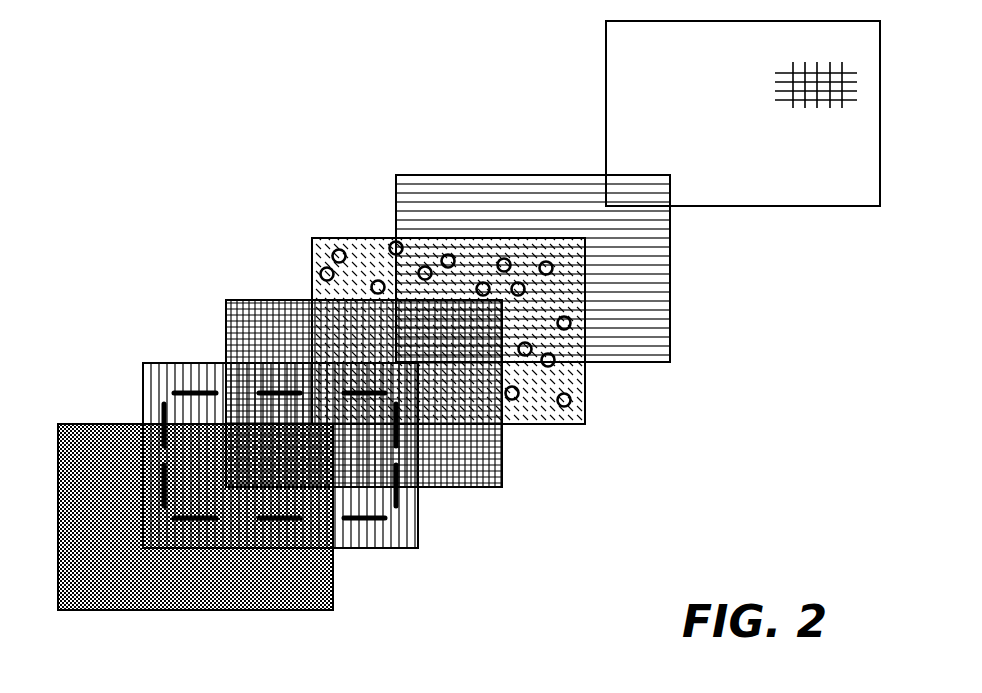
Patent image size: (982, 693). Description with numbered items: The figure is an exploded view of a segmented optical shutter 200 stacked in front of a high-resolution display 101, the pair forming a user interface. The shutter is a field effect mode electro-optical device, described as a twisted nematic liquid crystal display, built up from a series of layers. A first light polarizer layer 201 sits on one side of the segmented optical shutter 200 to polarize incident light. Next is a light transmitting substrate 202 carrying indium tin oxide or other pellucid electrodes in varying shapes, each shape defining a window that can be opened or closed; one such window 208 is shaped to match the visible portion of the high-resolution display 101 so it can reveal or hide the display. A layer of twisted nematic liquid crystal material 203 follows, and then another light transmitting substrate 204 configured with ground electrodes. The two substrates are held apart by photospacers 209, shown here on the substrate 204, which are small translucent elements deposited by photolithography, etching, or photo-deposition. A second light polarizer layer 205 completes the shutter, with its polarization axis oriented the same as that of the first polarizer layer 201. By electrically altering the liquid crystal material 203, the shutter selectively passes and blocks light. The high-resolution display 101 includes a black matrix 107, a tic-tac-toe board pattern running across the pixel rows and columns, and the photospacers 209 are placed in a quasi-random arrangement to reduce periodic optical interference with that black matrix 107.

The high-resolution display 101 is at (743, 197).
The black matrix 107 is at (805, 103).
The segmented optical shutter 200 is at (183, 135).
The first light polarizer layer 201 is at (302, 612).
The light transmitting substrate 202 is at (294, 457).
The twisted nematic liquid crystal material 203 is at (469, 487).
The light transmitting substrate 204 is at (453, 334).
The second light polarizer layer 205 is at (637, 363).
The window 208 is at (205, 390).
The photospacers 209 is at (392, 243).